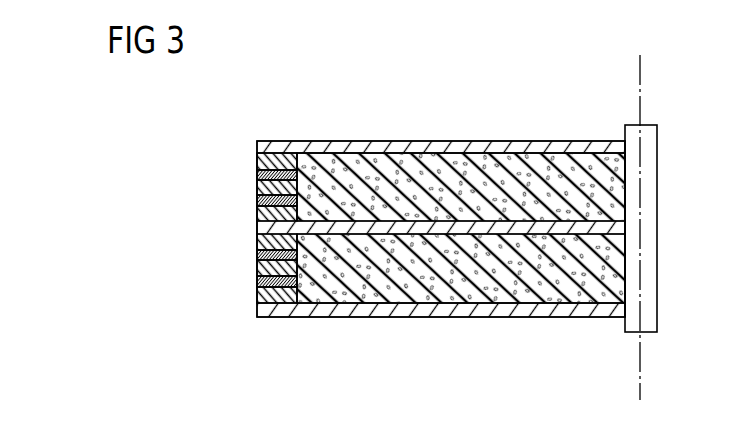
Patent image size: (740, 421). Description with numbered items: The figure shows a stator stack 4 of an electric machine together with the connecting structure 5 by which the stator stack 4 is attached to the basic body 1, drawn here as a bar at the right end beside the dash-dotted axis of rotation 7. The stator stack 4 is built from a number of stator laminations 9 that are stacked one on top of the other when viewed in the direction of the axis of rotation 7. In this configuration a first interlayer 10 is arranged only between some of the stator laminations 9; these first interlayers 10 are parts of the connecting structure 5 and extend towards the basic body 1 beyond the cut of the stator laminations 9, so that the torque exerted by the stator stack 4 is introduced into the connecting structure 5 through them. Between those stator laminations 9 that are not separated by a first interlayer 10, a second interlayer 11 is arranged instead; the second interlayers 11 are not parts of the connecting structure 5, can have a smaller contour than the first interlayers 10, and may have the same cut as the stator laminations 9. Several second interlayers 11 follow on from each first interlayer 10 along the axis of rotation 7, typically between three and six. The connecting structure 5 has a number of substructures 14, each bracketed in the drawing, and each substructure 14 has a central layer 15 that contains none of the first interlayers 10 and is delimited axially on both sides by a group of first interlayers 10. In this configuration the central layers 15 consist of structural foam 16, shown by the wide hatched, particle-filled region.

The basic body 1 is at (657, 188).
The stator stack 4 is at (279, 130).
The connecting structure 5 is at (495, 130).
The axis of rotation 7 is at (641, 100).
The stator laminations 9 is at (257, 214).
The first interlayer 10 is at (357, 222).
The second interlayer 11 is at (257, 175).
The substructure 14 is at (168, 140).
The central layer 15 is at (461, 228).
The structural foam 16 is at (425, 172).